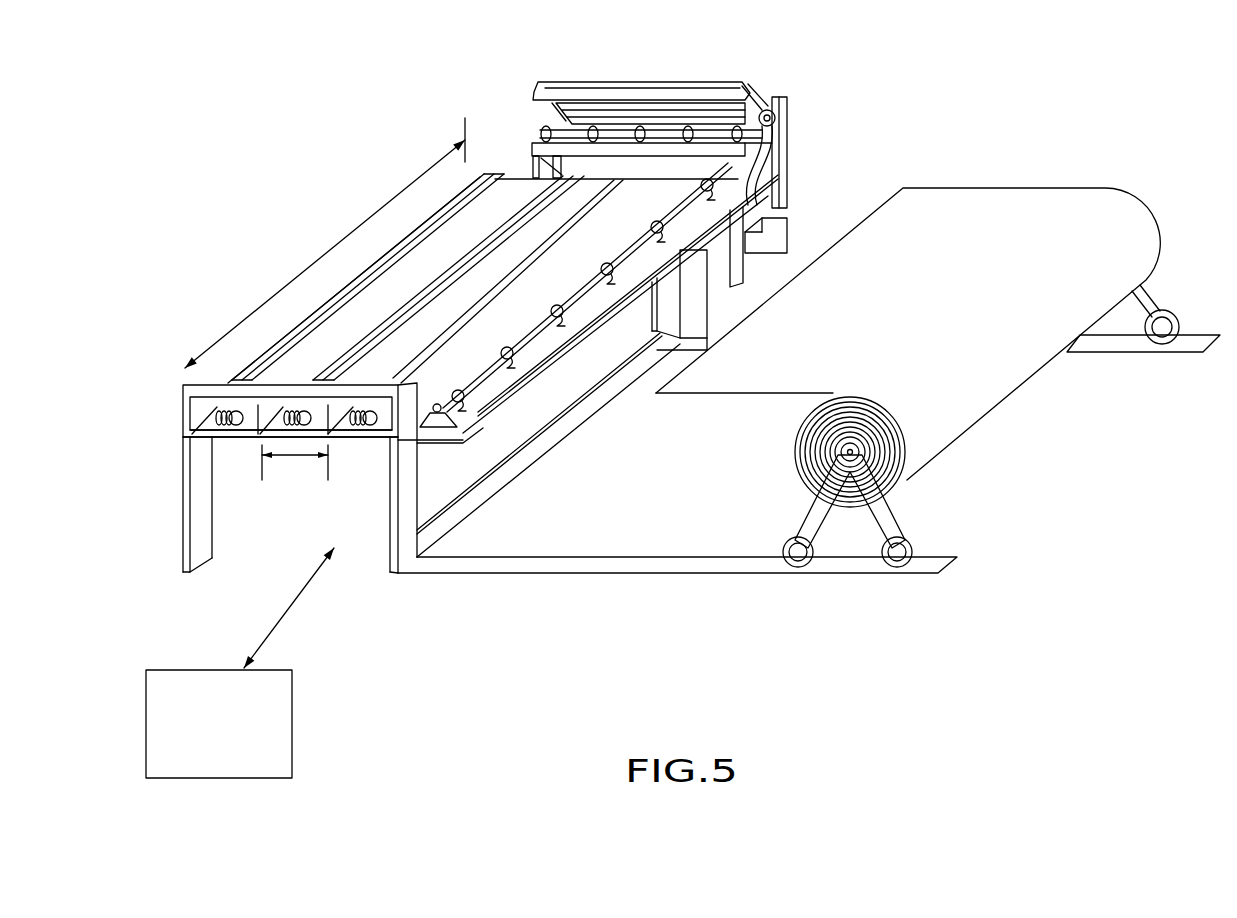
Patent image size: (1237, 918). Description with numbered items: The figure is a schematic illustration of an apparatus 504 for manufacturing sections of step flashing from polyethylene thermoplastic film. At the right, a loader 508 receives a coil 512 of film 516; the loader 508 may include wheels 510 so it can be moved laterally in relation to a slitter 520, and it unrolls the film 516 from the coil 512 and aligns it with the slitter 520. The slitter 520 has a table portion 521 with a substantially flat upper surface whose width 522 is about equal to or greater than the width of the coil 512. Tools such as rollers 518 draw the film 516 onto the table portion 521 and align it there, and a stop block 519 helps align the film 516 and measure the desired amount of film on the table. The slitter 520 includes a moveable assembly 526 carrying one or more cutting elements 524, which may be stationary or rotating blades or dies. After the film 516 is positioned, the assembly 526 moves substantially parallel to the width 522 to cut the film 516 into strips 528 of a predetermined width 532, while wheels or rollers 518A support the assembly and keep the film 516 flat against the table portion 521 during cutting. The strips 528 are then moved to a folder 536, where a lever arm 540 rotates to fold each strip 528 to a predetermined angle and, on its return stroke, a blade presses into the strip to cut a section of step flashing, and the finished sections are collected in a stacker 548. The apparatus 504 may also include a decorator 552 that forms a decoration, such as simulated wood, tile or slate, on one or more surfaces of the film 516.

The apparatus 504 is at (172, 163).
The loader 508 is at (878, 604).
The wheels 510 is at (912, 545).
The coil 512 is at (800, 440).
The polyethylene thermoplastic film 516 is at (945, 192).
The rollers 518 is at (455, 402).
The wheels or rollers 518A is at (362, 432).
The stop block 519 is at (497, 172).
The slitter 520 is at (312, 212).
The table portion 521 is at (190, 430).
The width 522 is at (290, 284).
The cutting elements 524 is at (248, 433).
The moveable assembly 526 is at (212, 392).
The strips 528 is at (387, 320).
The predetermined width 532 is at (291, 457).
The folder 536 is at (503, 92).
The lever arm 540 is at (758, 96).
The stacker 548 is at (790, 213).
The decorator 552 is at (293, 754).